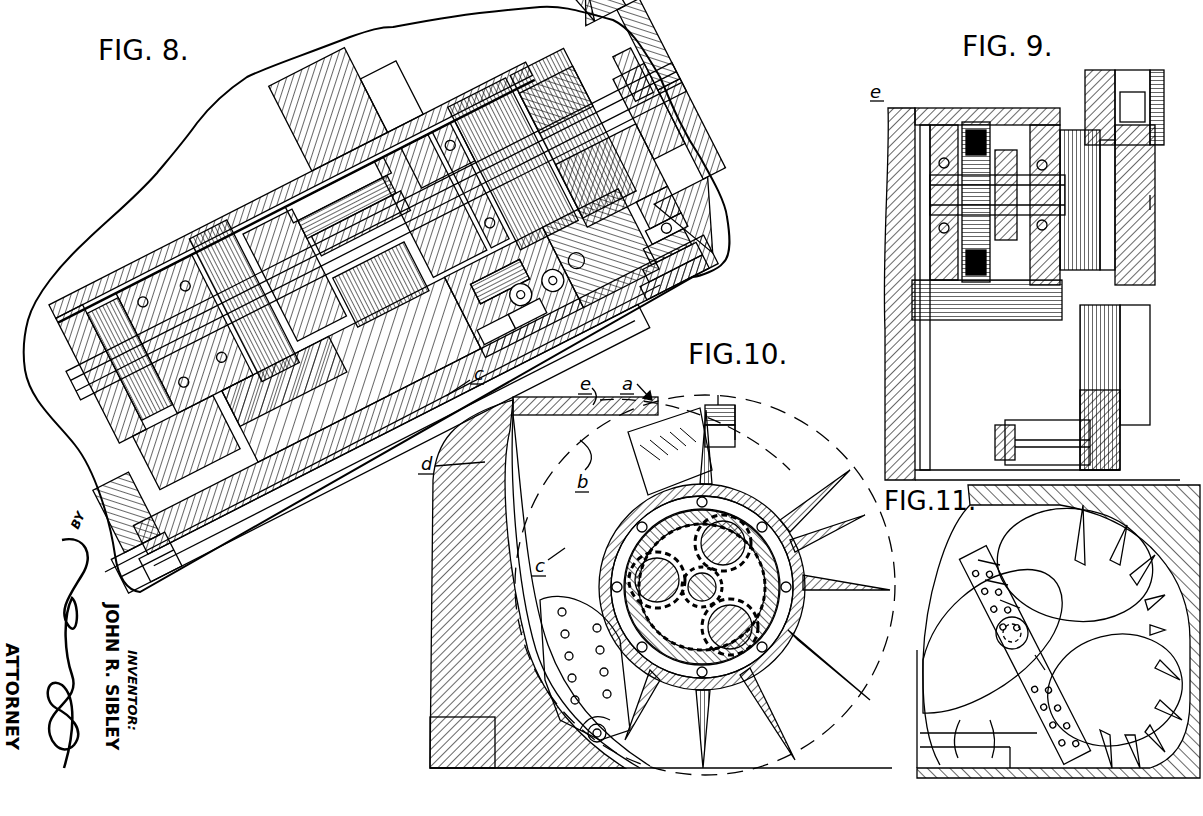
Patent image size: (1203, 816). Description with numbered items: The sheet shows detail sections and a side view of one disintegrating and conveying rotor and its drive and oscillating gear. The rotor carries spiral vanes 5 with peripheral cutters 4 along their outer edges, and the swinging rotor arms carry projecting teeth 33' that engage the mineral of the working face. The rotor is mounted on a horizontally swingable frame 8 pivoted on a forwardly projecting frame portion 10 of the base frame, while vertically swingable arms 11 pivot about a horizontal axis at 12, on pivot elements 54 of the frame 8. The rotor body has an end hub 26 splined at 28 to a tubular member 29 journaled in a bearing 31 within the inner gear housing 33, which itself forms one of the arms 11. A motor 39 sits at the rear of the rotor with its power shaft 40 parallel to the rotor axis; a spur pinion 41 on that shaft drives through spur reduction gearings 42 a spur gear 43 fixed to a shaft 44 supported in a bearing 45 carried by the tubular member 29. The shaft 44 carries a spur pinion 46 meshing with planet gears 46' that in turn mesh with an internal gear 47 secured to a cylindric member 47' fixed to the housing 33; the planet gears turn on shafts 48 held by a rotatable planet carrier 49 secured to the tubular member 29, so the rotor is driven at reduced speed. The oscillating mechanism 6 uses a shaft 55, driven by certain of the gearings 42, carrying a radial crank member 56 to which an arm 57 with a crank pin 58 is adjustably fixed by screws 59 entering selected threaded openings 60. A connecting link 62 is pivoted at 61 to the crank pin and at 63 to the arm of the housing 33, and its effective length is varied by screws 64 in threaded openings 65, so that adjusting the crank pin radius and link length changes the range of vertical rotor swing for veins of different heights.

In FIG. 8, the peripheral cutters 4 is at (462, 328).
In FIG. 10, the peripheral cutters 4 is at (737, 415).
In FIG. 8, the spiral rotor vanes 5 is at (484, 328).
In FIG. 10, the spiral rotor vanes 5 is at (733, 440).
In FIG. 9, the oscillating mechanism 6 is at (1155, 202).
In FIG. 11, the oscillating mechanism 6 is at (1042, 666).
In FIG. 8, the swingable rotor frame 8 is at (352, 452).
In FIG. 9, the swingable rotor frame 8 is at (895, 150).
In FIG. 10, the swingable rotor frame 8 is at (440, 548).
In FIG. 11, the swingable rotor frame 8 is at (978, 750).
In FIG. 8, the forwardly projecting frame portion 10 is at (371, 318).
In FIG. 11, the forwardly projecting frame portion 10 is at (974, 732).
In FIG. 8, the vertically swingable arms 11 is at (425, 135).
In FIG. 9, the vertically swingable arms 11 is at (935, 125).
In FIG. 10, the vertically swingable arms 11 is at (732, 500).
In FIG. 11, the vertically swingable arms 11 is at (995, 555).
In FIG. 8, the horizontal pivot axis 12 is at (112, 492).
In FIG. 8, the end hub 26 is at (665, 292).
In FIG. 8, the key or spline connection 28 is at (668, 276).
In FIG. 8, the tubular member 29 is at (660, 245).
In FIG. 8, the bearing 31 is at (665, 228).
In FIG. 8, the inner gear housing 33 is at (548, 70).
In FIG. 9, the inner gear housing 33 is at (945, 175).
In FIG. 10, the inner gear housing 33 is at (670, 451).
In FIG. 11, the inner gear housing 33 is at (1075, 632).
In FIG. 8, the projecting teeth 33' is at (647, 133).
In FIG. 10, the projecting teeth 33' is at (757, 589).
In FIG. 11, the projecting teeth 33' is at (1115, 636).
In FIG. 8, the motor 39 is at (268, 510).
In FIG. 8, the power shaft 40 is at (142, 400).
In FIG. 8, the spur pinion 41 is at (118, 362).
In FIG. 8, the spur reduction gearings 42 is at (230, 245).
In FIG. 9, the spur reduction gearings 42 is at (1003, 150).
In FIG. 8, the spur gear 43 is at (548, 76).
In FIG. 8, the shaft 44 is at (655, 112).
In FIG. 8, the bearing 45 is at (450, 140).
In FIG. 8, the spur pinion 46 is at (676, 209).
In FIG. 10, the spur pinion 46 is at (702, 605).
In FIG. 8, the planet gears 46' is at (475, 281).
In FIG. 10, the planet gears 46' is at (673, 583).
In FIG. 8, the internal gear 47 is at (691, 129).
In FIG. 10, the internal gear 47 is at (707, 587).
In FIG. 8, the cylindric member 47' is at (655, 60).
In FIG. 10, the cylindric member 47' is at (827, 555).
In FIG. 8, the planet shafts 48 is at (520, 320).
In FIG. 10, the planet shafts 48 is at (650, 560).
In FIG. 8, the planet carrier 49 is at (500, 300).
In FIG. 10, the planet carrier 49 is at (665, 530).
In FIG. 8, the pivot elements 54 is at (110, 470).
In FIG. 8, the crank shaft 55 is at (320, 210).
In FIG. 9, the crank shaft 55 is at (1010, 150).
In FIG. 8, the radial crank member 56 is at (312, 195).
In FIG. 9, the radial crank member 56 is at (1072, 118).
In FIG. 11, the radial crank member 56 is at (1000, 565).
In FIG. 8, the crank arm 57 is at (305, 170).
In FIG. 9, the crank arm 57 is at (1103, 80).
In FIG. 11, the crank arm 57 is at (1008, 585).
In FIG. 9, the crank pin 58 is at (1130, 100).
In FIG. 11, the crank pin 58 is at (1020, 608).
In FIG. 9, the screws 59 is at (1105, 200).
In FIG. 9, the threaded openings 60 is at (1090, 225).
In FIG. 9, the pivot connection 61 is at (1156, 85).
In FIG. 11, the pivot connection 61 is at (996, 636).
In FIG. 8, the connecting link 62 is at (305, 100).
In FIG. 9, the connecting link 62 is at (1140, 234).
In FIG. 10, the connecting link 62 is at (530, 712).
In FIG. 11, the connecting link 62 is at (1020, 668).
In FIG. 9, the pivot connection 63 is at (1036, 432).
In FIG. 10, the pivot connection 63 is at (608, 736).
In FIG. 9, the screws 64 is at (1130, 368).
In FIG. 9, the threaded openings 65 is at (1105, 380).